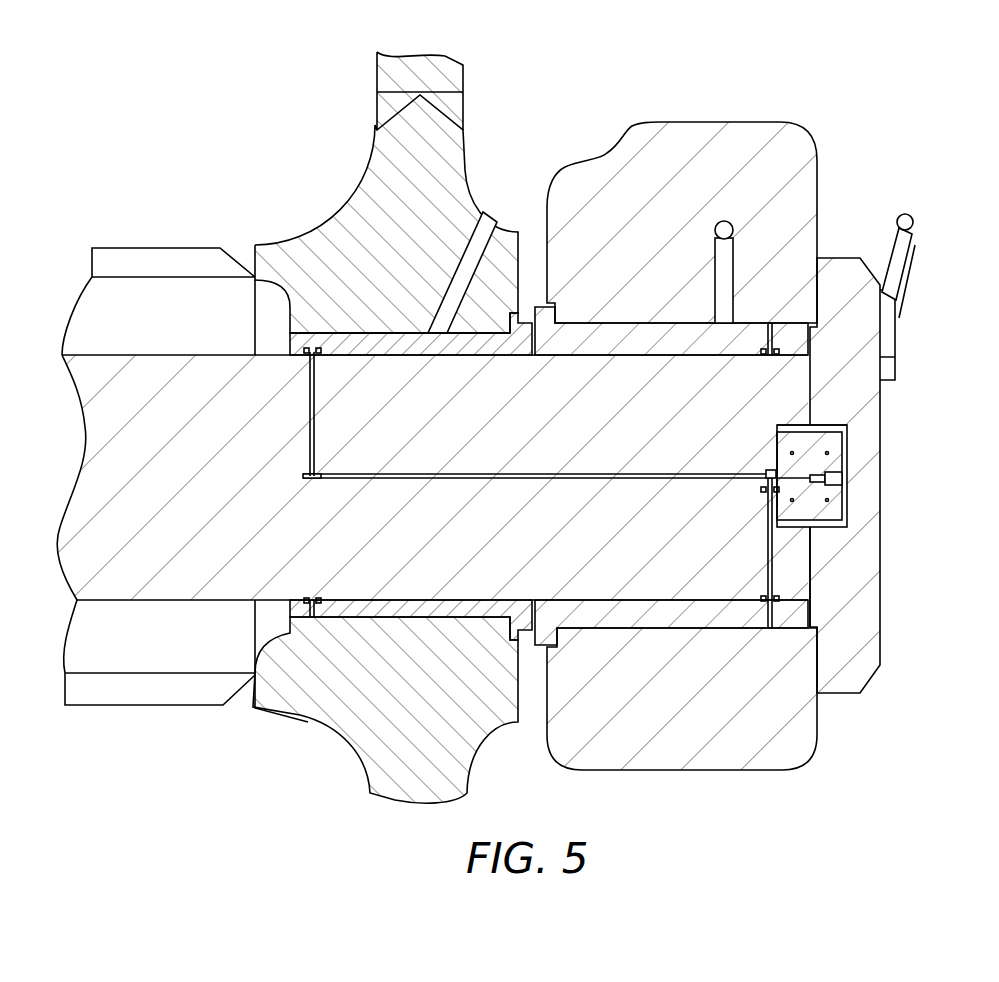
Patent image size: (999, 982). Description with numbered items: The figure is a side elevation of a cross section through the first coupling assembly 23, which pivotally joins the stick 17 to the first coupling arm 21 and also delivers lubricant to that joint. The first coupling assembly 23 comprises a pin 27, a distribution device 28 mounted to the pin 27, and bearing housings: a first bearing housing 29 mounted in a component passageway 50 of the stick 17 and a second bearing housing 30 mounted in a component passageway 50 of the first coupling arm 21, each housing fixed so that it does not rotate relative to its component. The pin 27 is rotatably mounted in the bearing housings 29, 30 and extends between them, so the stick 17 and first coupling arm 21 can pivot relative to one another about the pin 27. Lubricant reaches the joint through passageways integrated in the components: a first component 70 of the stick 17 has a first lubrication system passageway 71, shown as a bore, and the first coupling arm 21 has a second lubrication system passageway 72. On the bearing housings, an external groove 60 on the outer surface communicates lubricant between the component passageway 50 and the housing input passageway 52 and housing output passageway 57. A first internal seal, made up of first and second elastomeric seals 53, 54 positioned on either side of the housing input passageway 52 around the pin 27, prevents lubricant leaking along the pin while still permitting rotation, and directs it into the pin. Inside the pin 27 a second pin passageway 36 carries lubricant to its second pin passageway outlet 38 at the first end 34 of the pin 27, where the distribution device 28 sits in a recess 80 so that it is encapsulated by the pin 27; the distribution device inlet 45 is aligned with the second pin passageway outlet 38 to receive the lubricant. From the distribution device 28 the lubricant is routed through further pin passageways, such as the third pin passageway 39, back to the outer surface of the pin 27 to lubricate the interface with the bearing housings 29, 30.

The stick 17 is at (457, 76).
The first component 70 is at (378, 150).
The first lubrication system passageway 71 is at (490, 222).
The first coupling arm 21 is at (697, 130).
The second lubrication system passageway 72 is at (728, 224).
The external groove 60 is at (345, 333).
The first bearing housing 29 is at (400, 333).
The second bearing housing 30 is at (565, 350).
The component passageway 50 is at (578, 320).
The housing output passageway 57 is at (765, 336).
The housing input passageway 52 is at (310, 348).
The pin 27 is at (787, 383).
The recess 80 is at (793, 427).
The distribution device 28 is at (838, 452).
The first coupling assembly 23 is at (910, 479).
The second pin passageway 36 is at (497, 480).
The second pin passageway outlet 38 is at (729, 455).
The distribution device inlet 45 is at (772, 474).
The third pin passageway 39 is at (768, 541).
The first elastomeric seal 53 is at (307, 598).
The second elastomeric seal 54 is at (322, 604).
The first end 34 is at (810, 555).